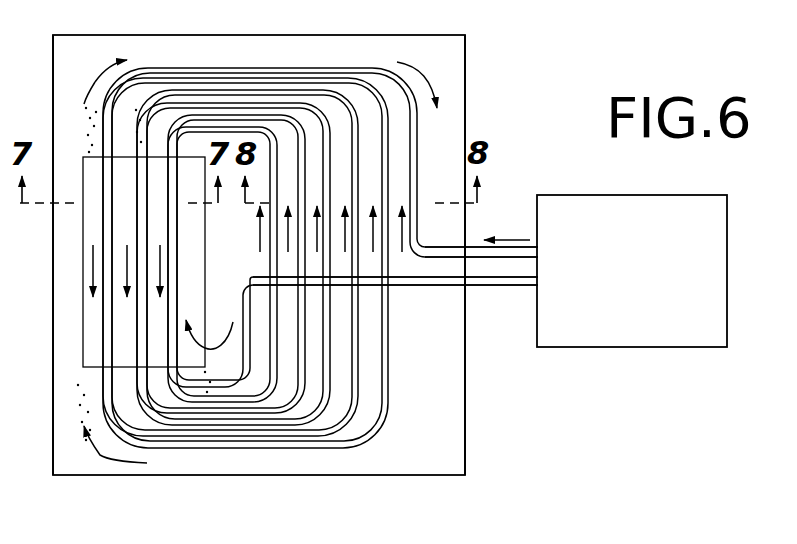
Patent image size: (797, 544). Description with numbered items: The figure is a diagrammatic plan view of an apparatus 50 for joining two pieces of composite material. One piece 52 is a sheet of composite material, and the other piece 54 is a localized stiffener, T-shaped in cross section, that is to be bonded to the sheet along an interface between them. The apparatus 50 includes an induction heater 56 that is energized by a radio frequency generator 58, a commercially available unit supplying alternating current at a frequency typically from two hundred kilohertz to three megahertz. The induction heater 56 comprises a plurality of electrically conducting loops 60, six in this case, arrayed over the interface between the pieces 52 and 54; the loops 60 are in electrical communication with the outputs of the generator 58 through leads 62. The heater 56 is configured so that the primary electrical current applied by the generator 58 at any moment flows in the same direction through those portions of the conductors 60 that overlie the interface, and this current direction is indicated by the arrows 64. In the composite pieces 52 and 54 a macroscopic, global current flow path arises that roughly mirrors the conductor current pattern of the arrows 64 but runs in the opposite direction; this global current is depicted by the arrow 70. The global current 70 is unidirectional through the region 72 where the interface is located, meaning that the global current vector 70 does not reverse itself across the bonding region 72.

The apparatus 50 is at (498, 97).
The piece of composite material 52 is at (54, 394).
The piece of composite material 54 is at (82, 352).
The induction heater 56 is at (438, 343).
The radio frequency generator 58 is at (637, 348).
The electrically conducting loops 60 is at (350, 412).
The leads 62 is at (497, 278).
The arrows 64 is at (93, 276).
The arrow 70 is at (95, 82).
The region 72 is at (94, 315).